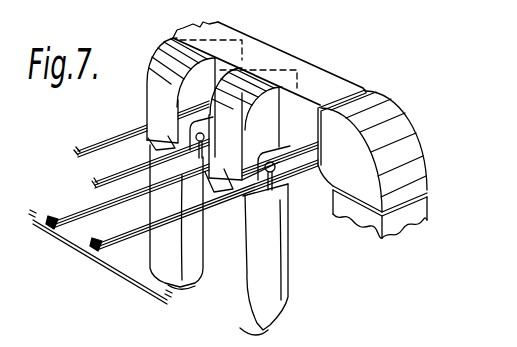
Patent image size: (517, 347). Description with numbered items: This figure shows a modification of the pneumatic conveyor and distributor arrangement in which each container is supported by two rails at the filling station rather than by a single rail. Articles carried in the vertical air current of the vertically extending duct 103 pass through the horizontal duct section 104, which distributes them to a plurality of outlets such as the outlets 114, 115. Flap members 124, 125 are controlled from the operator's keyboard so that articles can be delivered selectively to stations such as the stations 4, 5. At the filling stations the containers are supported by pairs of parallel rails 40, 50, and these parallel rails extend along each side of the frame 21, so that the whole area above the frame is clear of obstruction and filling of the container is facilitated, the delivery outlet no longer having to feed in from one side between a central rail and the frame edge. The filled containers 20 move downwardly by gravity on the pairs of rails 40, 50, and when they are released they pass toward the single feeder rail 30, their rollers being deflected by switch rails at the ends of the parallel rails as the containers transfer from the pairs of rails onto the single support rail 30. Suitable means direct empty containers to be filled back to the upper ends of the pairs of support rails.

The station 4 is at (207, 188).
The station 5 is at (147, 130).
The filled container 20 is at (282, 233).
The frame 21 is at (228, 195).
The single feeder rail 30 is at (140, 287).
The parallel rail 40 is at (143, 228).
The parallel rail 50 is at (124, 173).
The vertically extending duct 103 is at (417, 212).
The horizontal duct section 104 is at (332, 88).
The outlet 114 is at (250, 90).
The outlet 115 is at (175, 53).
The flap member 124 is at (300, 84).
The flap member 125 is at (244, 45).